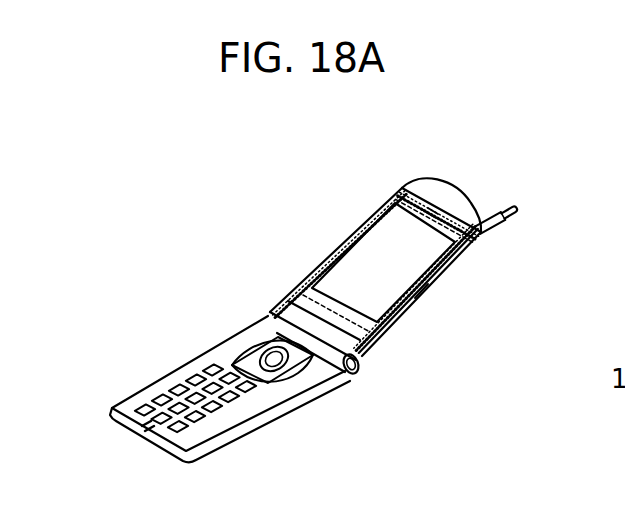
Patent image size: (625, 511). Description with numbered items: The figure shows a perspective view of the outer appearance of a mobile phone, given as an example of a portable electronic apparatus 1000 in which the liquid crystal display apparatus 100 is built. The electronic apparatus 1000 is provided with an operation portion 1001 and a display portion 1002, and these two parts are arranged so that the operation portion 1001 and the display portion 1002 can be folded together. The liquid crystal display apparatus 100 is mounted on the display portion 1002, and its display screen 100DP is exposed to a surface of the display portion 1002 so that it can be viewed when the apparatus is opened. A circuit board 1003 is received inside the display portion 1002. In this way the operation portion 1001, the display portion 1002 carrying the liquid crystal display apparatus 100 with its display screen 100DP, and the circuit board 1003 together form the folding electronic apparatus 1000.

The electronic apparatus 1000 is at (150, 193).
The operation portion 1001 is at (171, 375).
The liquid crystal display apparatus 100 is at (407, 191).
The display screen 100DP is at (353, 270).
The display portion 1002 is at (432, 290).
The circuit board 1003 is at (463, 213).